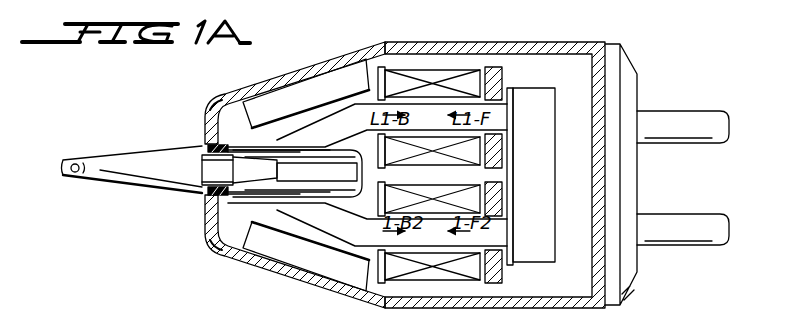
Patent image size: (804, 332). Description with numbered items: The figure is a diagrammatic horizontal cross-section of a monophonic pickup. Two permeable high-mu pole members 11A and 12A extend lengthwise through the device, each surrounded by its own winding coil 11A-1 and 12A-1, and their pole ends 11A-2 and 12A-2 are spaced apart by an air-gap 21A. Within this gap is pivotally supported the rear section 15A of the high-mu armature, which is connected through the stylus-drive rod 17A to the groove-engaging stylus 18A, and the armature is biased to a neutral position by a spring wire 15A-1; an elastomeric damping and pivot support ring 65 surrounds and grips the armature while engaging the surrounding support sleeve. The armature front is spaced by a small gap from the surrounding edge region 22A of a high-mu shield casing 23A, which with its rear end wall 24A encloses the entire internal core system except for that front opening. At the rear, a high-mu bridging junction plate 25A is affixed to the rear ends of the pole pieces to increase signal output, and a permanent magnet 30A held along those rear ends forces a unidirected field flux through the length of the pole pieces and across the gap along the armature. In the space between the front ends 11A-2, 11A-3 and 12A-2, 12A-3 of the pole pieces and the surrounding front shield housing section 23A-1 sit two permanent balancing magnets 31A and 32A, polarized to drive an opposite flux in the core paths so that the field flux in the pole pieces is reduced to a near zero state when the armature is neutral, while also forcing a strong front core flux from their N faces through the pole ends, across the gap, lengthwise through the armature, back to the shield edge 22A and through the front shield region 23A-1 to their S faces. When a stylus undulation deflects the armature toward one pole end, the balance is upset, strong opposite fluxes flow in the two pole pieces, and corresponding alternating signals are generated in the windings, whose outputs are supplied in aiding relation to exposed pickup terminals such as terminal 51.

The permeable magnetic pole member 11A is at (497, 121).
The winding coil 11A-1 is at (466, 76).
The pole end 11A-2 is at (226, 110).
The front end of pole piece 11A-3 is at (343, 100).
The permeable magnetic pole member 12A is at (497, 238).
The winding coil 12A-1 is at (437, 281).
The pole end 12A-2 is at (245, 227).
The front end of pole piece 12A-3 is at (348, 233).
The rear section of armature 15A is at (272, 171).
The spring wire 15A-1 is at (284, 178).
The stylus-drive rod 17A is at (119, 183).
The groove-engaging stylus 18A is at (71, 182).
The air-gap 21A is at (205, 150).
The edge region of shield casing 22A is at (212, 125).
The shield casing 23A is at (538, 36).
The front shield housing section 23A-1 is at (305, 72).
The rear end wall 24A is at (607, 100).
The bridging junction plate 25A is at (513, 265).
The permanent magnet 30A is at (531, 99).
The permanent balancing magnet 31A is at (260, 100).
The permanent balancing magnet 32A is at (283, 250).
The pickup terminal 51 is at (700, 114).
The elastomeric damping and pivot support ring 65 is at (210, 161).